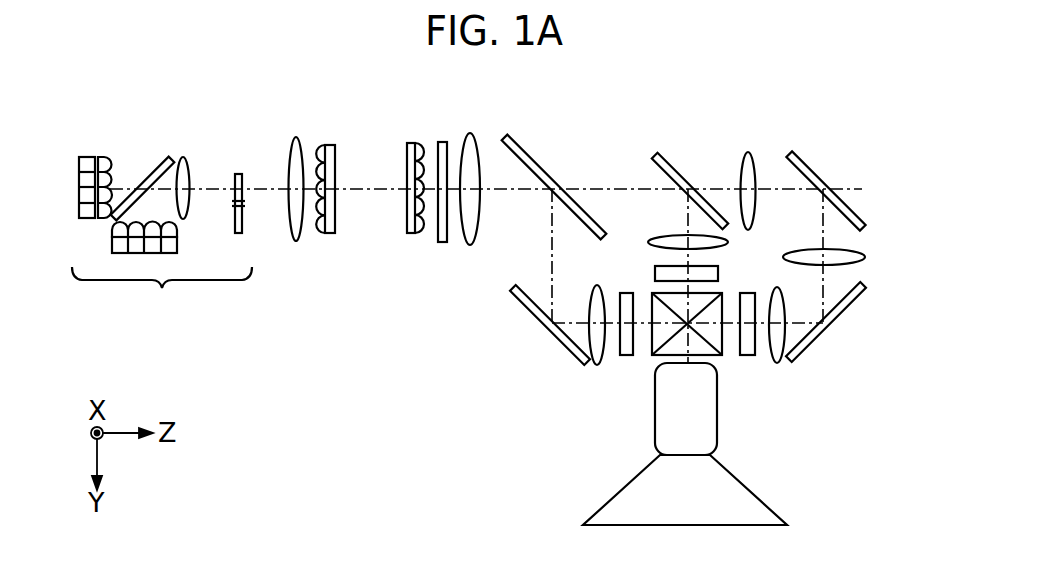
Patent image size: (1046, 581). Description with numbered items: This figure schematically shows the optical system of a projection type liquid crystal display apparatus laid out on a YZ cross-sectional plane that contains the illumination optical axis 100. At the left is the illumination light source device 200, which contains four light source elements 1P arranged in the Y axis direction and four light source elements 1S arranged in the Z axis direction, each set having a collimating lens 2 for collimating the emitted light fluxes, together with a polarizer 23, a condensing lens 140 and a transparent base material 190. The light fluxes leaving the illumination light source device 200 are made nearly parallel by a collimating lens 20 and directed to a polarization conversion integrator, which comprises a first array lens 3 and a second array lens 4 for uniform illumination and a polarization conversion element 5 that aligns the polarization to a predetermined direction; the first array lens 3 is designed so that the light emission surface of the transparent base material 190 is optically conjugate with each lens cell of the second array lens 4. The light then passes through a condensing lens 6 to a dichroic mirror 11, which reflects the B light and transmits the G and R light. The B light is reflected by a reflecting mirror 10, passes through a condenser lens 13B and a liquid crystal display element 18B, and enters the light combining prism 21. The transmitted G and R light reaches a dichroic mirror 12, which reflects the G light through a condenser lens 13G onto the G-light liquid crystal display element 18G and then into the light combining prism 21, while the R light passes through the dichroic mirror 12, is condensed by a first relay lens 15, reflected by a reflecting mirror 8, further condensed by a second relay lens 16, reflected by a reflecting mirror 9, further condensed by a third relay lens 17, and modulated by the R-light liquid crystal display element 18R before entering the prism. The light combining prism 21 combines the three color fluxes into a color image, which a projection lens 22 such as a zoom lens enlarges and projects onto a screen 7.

The light source elements 1P is at (90, 157).
The collimating lens 2 is at (105, 157).
The polarizer 23 is at (152, 170).
The condensing lens 140 is at (183, 157).
The transparent base material 190 is at (238, 174).
The light source elements 1S is at (178, 248).
The illumination light source device 200 is at (162, 295).
The collimating lens 20 is at (296, 138).
The first array lens 3 is at (330, 145).
The illumination optical axis 100 is at (375, 187).
The second array lens 4 is at (411, 143).
The polarization conversion element 5 is at (443, 142).
The condensing lens 6 is at (470, 133).
The dichroic mirror 11 is at (522, 149).
The dichroic mirror 12 is at (675, 167).
The first relay lens 15 is at (748, 152).
The reflecting mirror 8 is at (808, 167).
The condenser lens 13G is at (662, 235).
The G-light liquid crystal display element 18G is at (655, 270).
The R-light liquid crystal display element 18R is at (748, 293).
The second relay lens 16 is at (865, 257).
The reflecting mirror 10 is at (526, 310).
The condenser lens 13B is at (597, 365).
The liquid crystal display element 18B is at (626, 355).
The light combining prism 21 is at (722, 355).
The third relay lens 17 is at (777, 363).
The reflecting mirror 9 is at (845, 305).
The projection lens 22 is at (717, 413).
The screen 7 is at (762, 500).